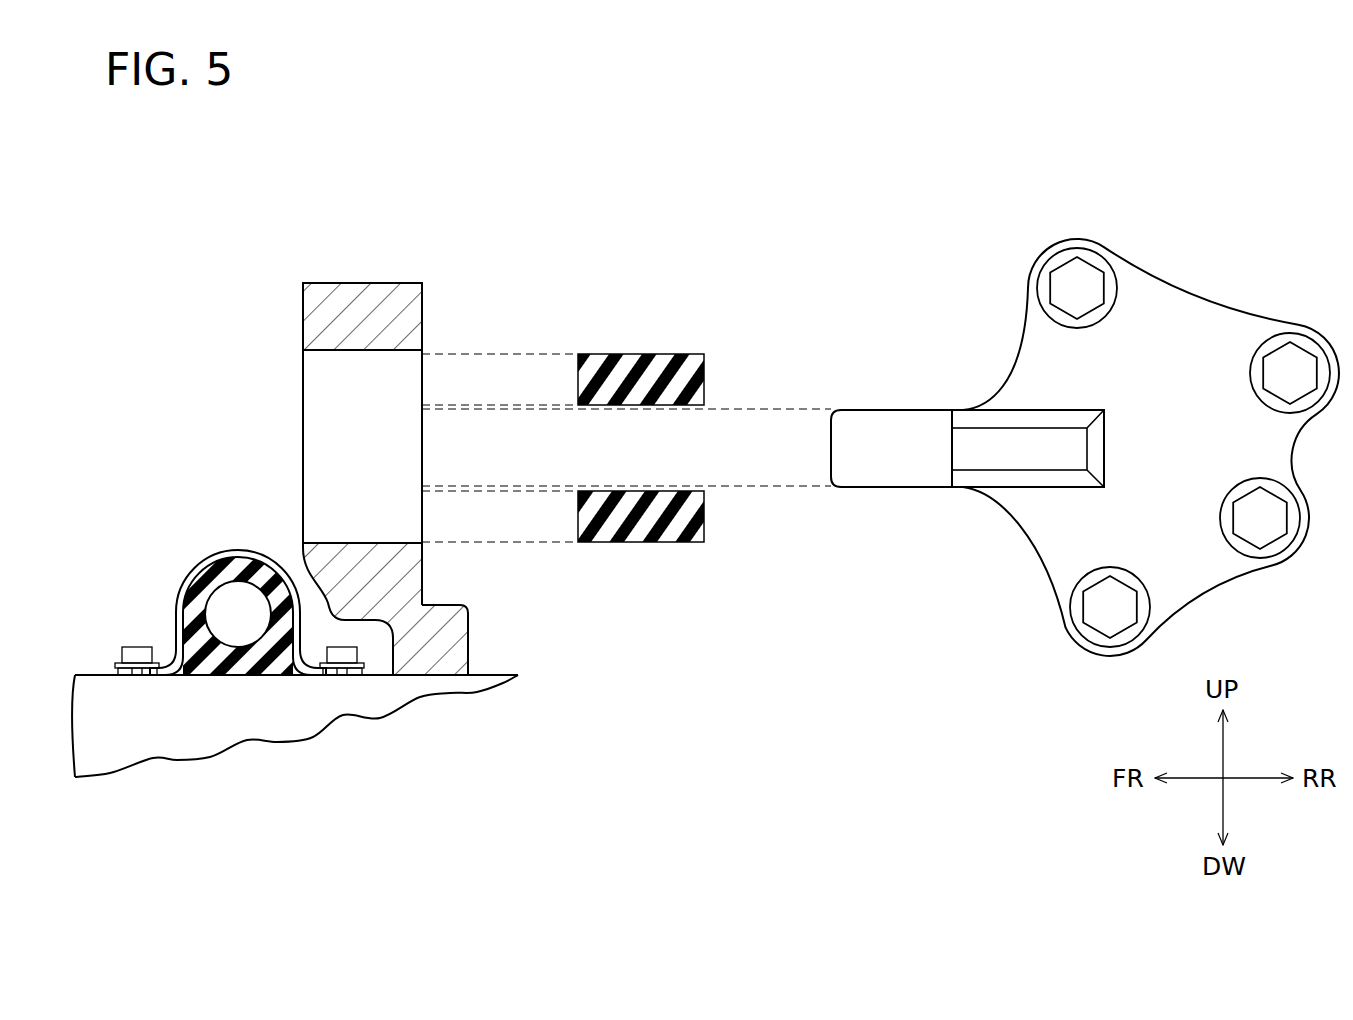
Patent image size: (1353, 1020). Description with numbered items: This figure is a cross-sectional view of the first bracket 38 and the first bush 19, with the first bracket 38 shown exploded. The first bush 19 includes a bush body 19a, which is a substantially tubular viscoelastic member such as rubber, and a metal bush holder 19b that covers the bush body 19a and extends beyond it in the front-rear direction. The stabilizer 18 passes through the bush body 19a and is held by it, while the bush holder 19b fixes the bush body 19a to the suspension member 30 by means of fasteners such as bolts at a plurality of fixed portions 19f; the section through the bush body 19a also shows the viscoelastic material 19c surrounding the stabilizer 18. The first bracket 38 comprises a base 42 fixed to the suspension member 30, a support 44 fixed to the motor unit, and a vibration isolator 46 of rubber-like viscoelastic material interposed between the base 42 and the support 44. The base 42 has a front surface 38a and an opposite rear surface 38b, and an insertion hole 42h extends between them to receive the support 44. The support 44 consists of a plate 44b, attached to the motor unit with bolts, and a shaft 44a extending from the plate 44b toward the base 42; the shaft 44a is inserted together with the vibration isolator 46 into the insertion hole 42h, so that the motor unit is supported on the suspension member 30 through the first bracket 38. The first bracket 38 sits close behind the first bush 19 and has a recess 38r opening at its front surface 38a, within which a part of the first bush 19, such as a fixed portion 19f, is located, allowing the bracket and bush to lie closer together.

The stabilizer 18 is at (238, 605).
The first bush 19 is at (247, 489).
The bush body 19a is at (250, 668).
The bush holder 19b is at (233, 553).
The rubber member 19c is at (213, 635).
The fixed portions 19f is at (100, 654).
The suspension member 30 is at (465, 685).
The first bracket 38 is at (1196, 147).
The front surface 38a is at (303, 321).
The rear surface 38b is at (422, 309).
The recess 38r is at (380, 660).
The base 42 is at (432, 229).
The insertion hole 42h is at (333, 350).
The support 44 is at (1236, 239).
The shaft 44a is at (902, 487).
The plate 44b is at (1207, 343).
The vibration isolator 46 is at (660, 360).